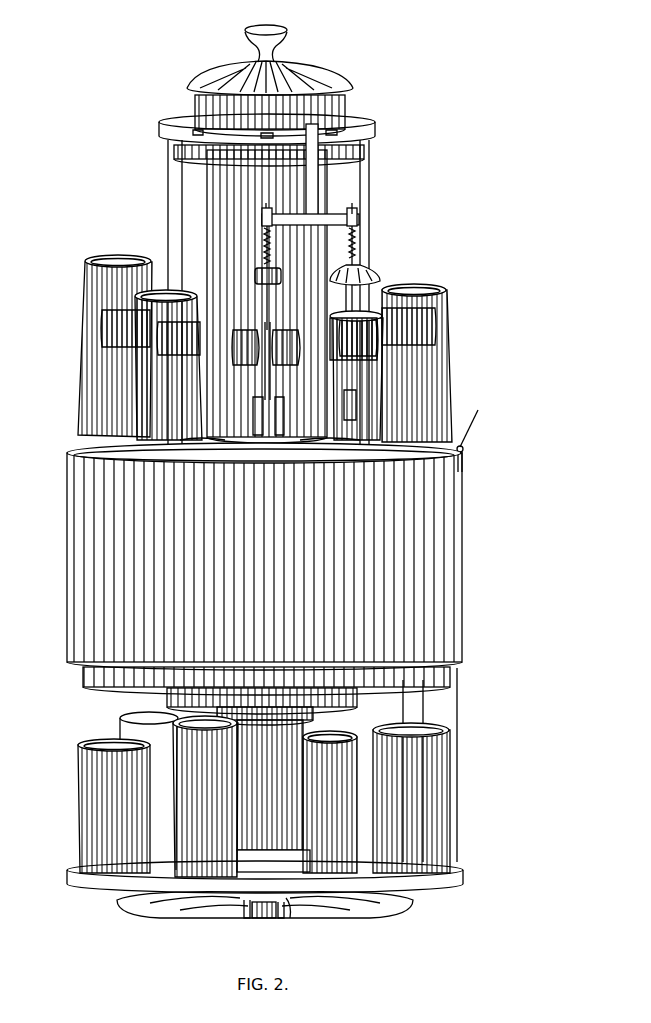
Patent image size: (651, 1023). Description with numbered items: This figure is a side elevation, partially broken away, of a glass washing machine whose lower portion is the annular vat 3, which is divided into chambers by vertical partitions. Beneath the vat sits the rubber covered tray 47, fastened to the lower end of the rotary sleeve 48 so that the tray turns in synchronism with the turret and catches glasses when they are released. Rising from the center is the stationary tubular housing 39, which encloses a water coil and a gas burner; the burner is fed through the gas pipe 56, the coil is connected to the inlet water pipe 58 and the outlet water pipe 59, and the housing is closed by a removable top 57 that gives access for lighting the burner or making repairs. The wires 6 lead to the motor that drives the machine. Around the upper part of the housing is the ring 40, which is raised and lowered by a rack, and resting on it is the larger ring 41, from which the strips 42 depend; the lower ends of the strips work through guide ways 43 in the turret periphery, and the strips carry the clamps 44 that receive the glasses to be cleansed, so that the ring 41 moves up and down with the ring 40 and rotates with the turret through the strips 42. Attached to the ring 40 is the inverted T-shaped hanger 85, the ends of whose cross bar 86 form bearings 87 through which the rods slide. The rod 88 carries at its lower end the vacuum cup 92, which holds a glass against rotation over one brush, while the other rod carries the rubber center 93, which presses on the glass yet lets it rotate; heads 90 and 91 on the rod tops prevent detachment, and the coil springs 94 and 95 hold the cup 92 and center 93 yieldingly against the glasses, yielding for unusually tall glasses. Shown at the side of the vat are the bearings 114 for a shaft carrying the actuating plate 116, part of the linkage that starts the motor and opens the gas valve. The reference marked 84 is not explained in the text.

The removable top 57 is at (340, 80).
The larger ring 41 is at (376, 135).
The ring 40 is at (366, 157).
The strips 42 is at (168, 188).
The tubular housing 39 is at (218, 212).
The inverted T-shaped hanger 85 is at (306, 194).
The cross bar 86 is at (302, 228).
The head 91 is at (272, 202).
The bearings 87 is at (262, 228).
The coil spring 95 is at (262, 241).
The rod 84 is at (263, 258).
The rubber center 93 is at (260, 284).
The head 90 is at (357, 200).
The coil spring 94 is at (360, 239).
The rod 88 is at (360, 253).
The vacuum cup 92 is at (381, 278).
The guide ways 43 is at (258, 405).
The clamps 44 is at (100, 323).
The actuating plate 116 is at (484, 428).
The bearings 114 is at (464, 458).
The vat 3 is at (463, 496).
The rotary sleeve 48 is at (304, 722).
The rubber covered tray 47 is at (465, 872).
The inlet water pipe 58 is at (246, 920).
The gas pipe 56 is at (262, 920).
The outlet water pipe 59 is at (280, 922).
The wires 6 is at (292, 918).